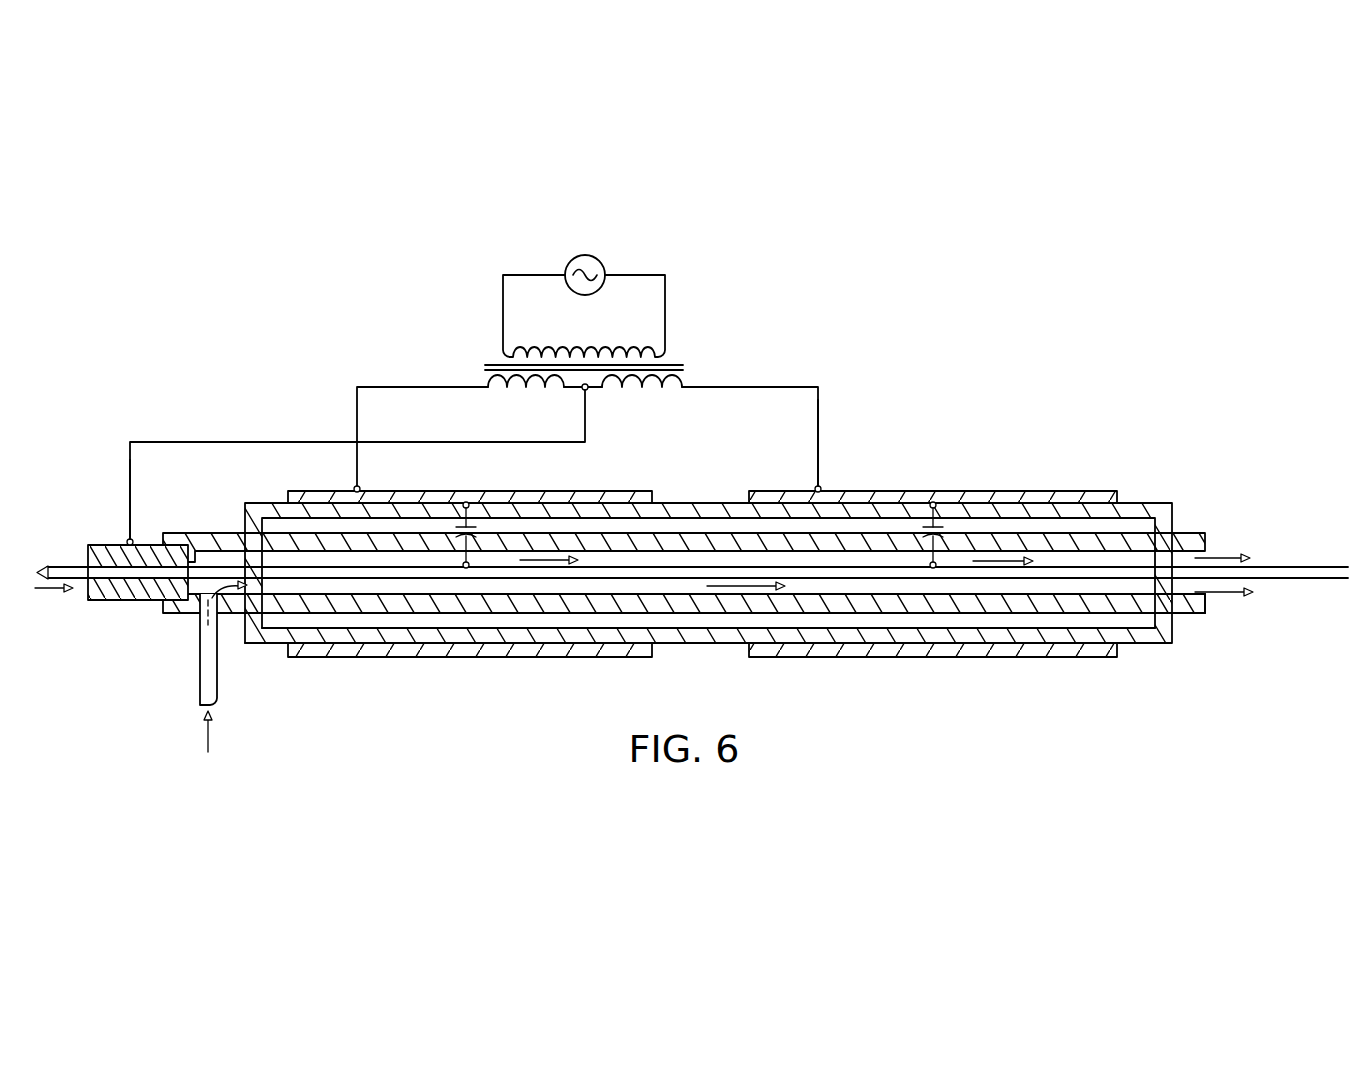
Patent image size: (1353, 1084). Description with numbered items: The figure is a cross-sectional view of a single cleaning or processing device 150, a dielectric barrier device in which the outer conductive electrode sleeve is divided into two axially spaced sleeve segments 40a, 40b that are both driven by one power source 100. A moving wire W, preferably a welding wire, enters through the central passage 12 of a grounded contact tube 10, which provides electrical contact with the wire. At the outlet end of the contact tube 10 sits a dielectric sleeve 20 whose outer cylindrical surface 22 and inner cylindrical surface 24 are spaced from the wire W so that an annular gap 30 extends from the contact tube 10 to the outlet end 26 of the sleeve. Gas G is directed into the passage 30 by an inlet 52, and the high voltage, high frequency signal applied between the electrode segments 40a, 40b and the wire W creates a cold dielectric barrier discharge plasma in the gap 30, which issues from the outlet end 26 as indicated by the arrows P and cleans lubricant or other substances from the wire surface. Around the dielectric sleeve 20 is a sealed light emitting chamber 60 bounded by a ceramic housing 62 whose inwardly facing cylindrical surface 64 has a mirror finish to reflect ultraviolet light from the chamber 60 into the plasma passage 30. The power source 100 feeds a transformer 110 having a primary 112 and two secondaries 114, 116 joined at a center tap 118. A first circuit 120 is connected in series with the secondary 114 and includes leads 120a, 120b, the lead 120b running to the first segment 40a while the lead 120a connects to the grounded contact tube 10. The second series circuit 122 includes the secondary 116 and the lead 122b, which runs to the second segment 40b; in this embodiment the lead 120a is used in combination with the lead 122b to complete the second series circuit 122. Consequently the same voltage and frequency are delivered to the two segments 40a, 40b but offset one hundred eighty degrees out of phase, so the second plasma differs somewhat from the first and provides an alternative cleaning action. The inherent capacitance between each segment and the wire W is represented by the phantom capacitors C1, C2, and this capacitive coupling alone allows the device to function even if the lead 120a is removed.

The grounded contact tube 10 is at (104, 533).
The central passage 12 is at (135, 567).
The dielectric sleeve 20 is at (1125, 525).
The outer cylindrical surface 22 is at (877, 600).
The inner cylindrical surface 24 is at (912, 596).
The outlet end 26 is at (1210, 605).
The annular gap 30 is at (1036, 587).
The first sleeve segment 40a is at (592, 490).
The second sleeve segment 40b is at (805, 489).
The gas inlet 52 is at (200, 670).
The light emitting chamber 60 is at (708, 622).
The housing 62 is at (273, 652).
The inwardly facing cylindrical surface 64 is at (550, 622).
The power source 100 is at (568, 267).
The transformer 110 is at (683, 347).
The primary 112 is at (592, 345).
The first secondary 114 is at (533, 390).
The second secondary 116 is at (652, 394).
The center tap 118 is at (588, 392).
The first circuit 120 is at (262, 427).
The first lead 120a is at (133, 483).
The second lead 120b is at (437, 385).
The second series circuit 122 is at (838, 388).
The lead 122b is at (820, 435).
The dielectric barrier device 150 is at (1062, 458).
The phantom capacitor C1 is at (484, 535).
The phantom capacitor C2 is at (950, 535).
The gas G is at (208, 733).
The plasma P is at (1222, 558).
The wire W is at (1288, 567).